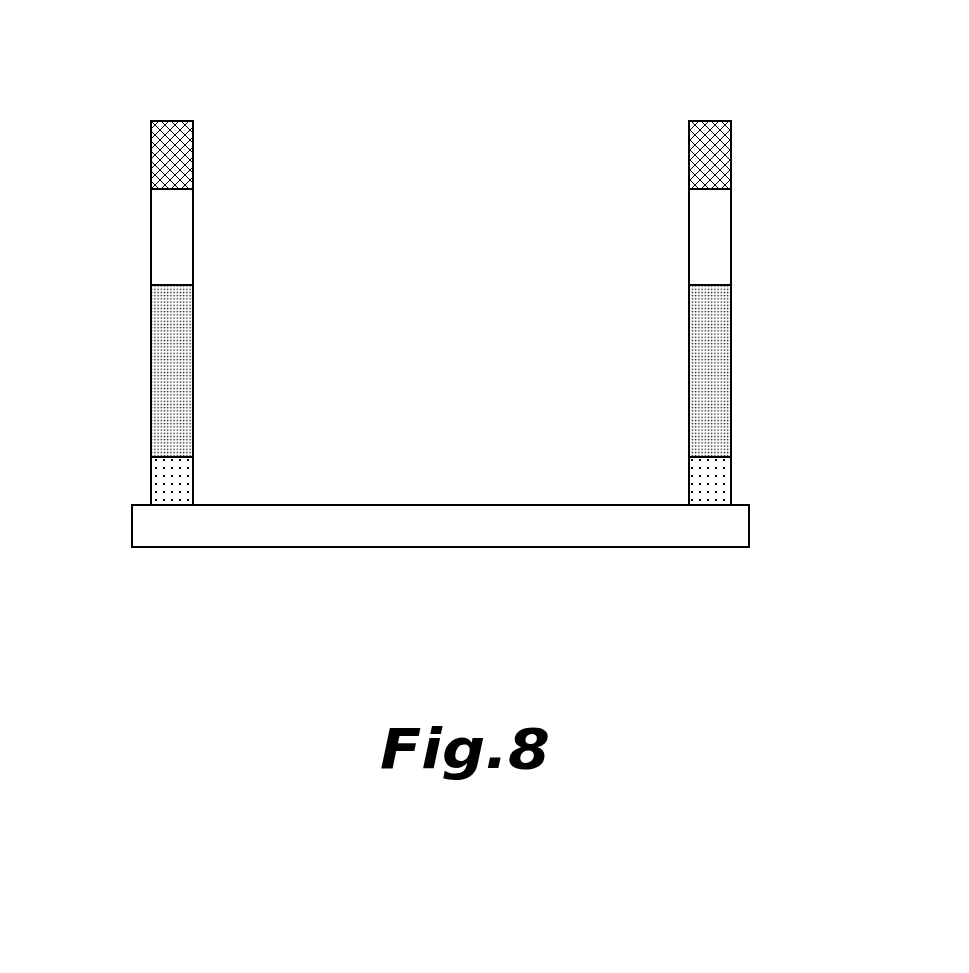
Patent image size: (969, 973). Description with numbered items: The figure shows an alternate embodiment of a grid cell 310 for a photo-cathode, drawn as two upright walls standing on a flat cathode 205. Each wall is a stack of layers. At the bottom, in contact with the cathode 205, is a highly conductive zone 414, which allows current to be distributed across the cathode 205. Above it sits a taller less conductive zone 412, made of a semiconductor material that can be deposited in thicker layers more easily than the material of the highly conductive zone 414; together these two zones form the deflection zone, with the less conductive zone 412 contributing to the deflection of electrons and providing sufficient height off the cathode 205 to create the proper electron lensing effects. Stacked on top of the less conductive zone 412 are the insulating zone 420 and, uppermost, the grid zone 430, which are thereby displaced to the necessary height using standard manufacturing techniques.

The grid cell 310 is at (476, 106).
The cathode 205 is at (232, 548).
The highly conductive zone 414 is at (151, 470).
The less conductive zone 412 is at (151, 366).
The insulating zone 420 is at (151, 247).
The grid zone 430 is at (151, 146).